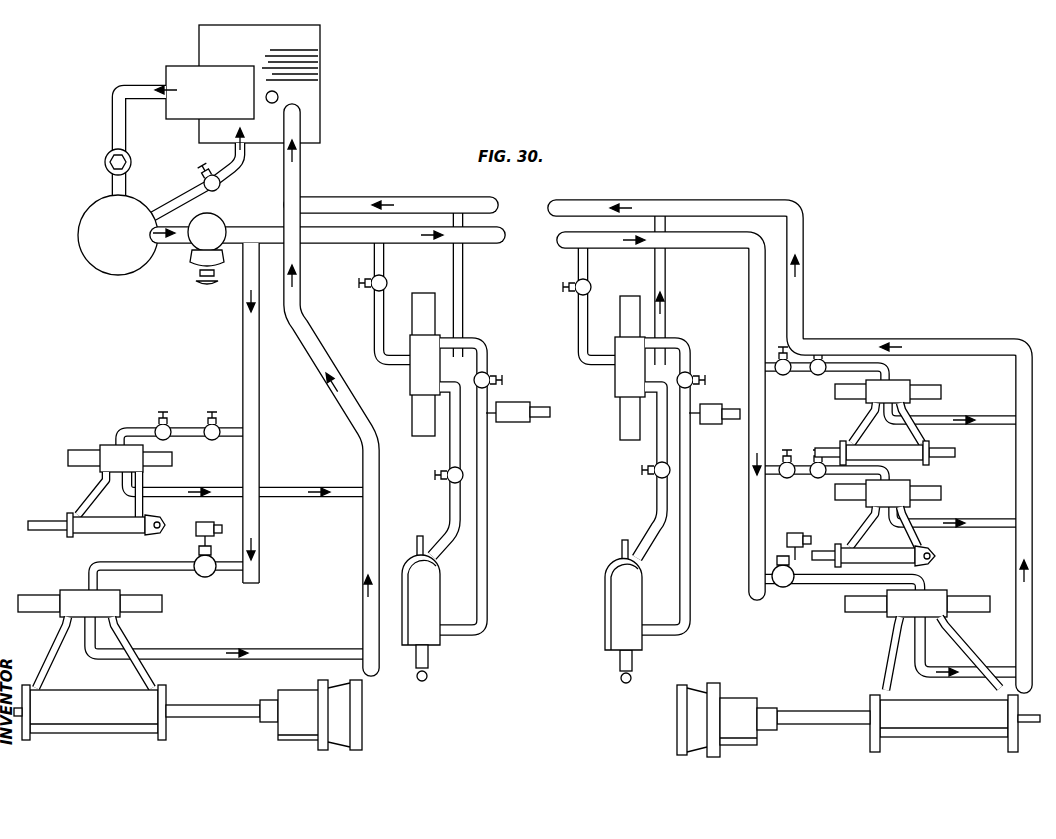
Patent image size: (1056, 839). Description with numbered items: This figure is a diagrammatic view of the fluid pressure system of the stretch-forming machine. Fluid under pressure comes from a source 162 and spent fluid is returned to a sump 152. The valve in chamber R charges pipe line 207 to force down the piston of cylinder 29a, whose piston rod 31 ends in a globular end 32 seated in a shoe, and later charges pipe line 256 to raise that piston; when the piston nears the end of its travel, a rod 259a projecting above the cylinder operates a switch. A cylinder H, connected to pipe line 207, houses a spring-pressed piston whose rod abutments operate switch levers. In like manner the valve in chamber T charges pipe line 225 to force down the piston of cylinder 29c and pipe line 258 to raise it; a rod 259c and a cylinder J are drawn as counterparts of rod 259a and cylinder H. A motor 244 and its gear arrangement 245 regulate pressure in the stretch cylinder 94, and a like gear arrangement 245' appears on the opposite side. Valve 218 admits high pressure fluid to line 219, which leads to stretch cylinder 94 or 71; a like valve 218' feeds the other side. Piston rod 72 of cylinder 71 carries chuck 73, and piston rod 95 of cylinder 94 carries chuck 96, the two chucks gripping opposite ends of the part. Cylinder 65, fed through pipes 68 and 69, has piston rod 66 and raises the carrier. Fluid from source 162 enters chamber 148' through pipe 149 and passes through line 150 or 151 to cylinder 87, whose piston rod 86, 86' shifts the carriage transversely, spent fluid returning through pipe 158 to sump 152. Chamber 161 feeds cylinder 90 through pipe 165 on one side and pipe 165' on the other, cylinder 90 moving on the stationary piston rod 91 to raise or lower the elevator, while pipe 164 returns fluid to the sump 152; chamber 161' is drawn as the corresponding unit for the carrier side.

The sump 152 is at (310, 103).
The source of fluid under pressure 162 is at (80, 240).
The chamber R is at (410, 382).
The cylinder H is at (520, 424).
The pipe line 207 is at (456, 505).
The pipe line 256 is at (488, 518).
The rod 259a is at (418, 540).
The cylinder 29a is at (441, 592).
The piston rod 31 is at (430, 658).
The globular end 32 is at (424, 681).
The valve block 161' is at (120, 444).
The pipe 68 is at (85, 490).
The pipe 69 is at (145, 504).
The piston rod 66 is at (36, 530).
The cylinder 65 is at (105, 520).
The motor 244 is at (205, 520).
The valve 245' is at (183, 558).
The valve block 218' is at (90, 590).
The cylinder 71 is at (90, 712).
The piston rod 72 is at (207, 718).
The chuck 73 is at (290, 740).
The chamber T is at (615, 385).
The pressure element J is at (710, 425).
The pipe line 225 is at (660, 503).
The pipe line 258 is at (690, 517).
The vent pipe 259c is at (622, 548).
The cylinder 29c is at (605, 598).
The chamber 148' is at (899, 384).
The pipe 149 is at (842, 372).
The line 150 is at (910, 411).
The line 151 is at (862, 415).
The pipe 158 is at (884, 412).
The piston rod 86 is at (818, 439).
The piston rod 86' is at (957, 443).
The cylinder 87 is at (900, 461).
The chamber 161 is at (904, 487).
The pipe 164 is at (912, 510).
The pipe 165 is at (934, 528).
The pipe 165' is at (850, 526).
The cylinder 90 is at (898, 540).
The piston rod 91 is at (828, 561).
The gear arrangement 245 is at (801, 586).
The valve 218 is at (917, 594).
The line 219 is at (890, 652).
The cylinder 94 is at (940, 740).
The piston rod 95 is at (820, 725).
The chuck 96 is at (738, 745).